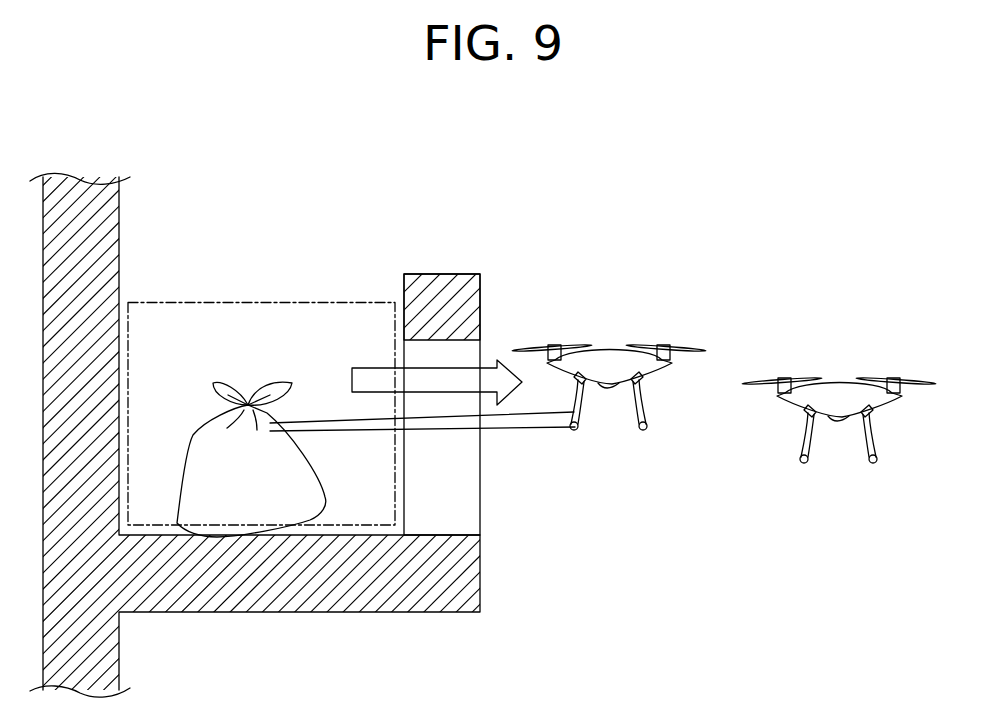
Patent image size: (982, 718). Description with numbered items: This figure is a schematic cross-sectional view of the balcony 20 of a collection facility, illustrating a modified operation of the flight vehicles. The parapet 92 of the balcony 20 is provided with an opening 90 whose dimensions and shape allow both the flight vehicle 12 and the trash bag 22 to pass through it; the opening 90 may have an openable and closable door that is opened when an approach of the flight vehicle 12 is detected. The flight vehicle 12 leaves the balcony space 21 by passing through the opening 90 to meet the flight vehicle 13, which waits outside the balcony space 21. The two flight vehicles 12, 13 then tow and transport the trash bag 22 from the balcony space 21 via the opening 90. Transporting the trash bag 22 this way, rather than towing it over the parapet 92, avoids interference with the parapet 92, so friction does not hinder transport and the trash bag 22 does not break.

The flight vehicle 12 is at (499, 356).
The flight vehicle 13 is at (846, 390).
The balcony 20 is at (292, 585).
The balcony space 21 is at (255, 302).
The trash bag 22 is at (193, 437).
The opening 90 is at (442, 497).
The parapet 92 is at (462, 310).